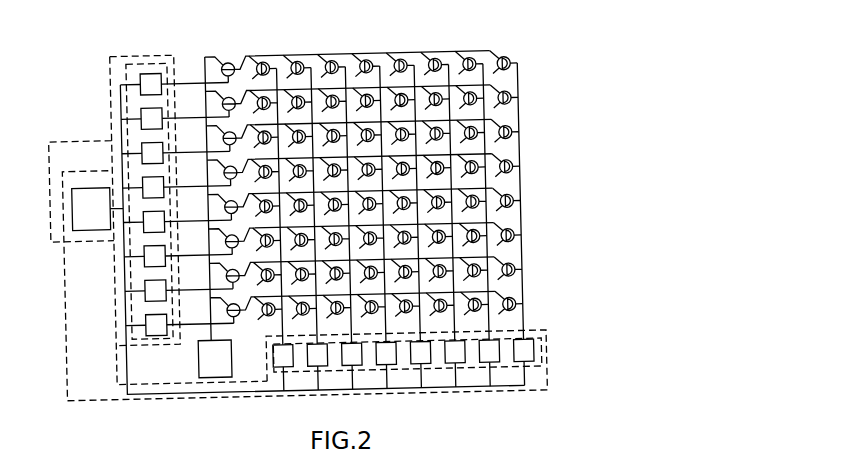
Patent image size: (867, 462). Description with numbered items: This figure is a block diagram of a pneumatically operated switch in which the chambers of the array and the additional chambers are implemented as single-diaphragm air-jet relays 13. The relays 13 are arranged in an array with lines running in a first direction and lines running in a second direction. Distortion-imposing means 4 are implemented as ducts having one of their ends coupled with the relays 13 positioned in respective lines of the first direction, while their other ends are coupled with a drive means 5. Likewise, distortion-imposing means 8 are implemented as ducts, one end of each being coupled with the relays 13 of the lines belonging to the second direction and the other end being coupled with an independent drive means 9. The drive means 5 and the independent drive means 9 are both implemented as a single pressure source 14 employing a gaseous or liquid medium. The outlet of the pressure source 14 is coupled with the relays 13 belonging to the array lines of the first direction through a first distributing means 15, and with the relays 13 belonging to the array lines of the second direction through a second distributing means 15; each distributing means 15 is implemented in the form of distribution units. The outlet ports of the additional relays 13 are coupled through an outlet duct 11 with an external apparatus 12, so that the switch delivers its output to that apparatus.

The distortion-imposing means 4 is at (318, 328).
The drive means 5 is at (546, 371).
The distortion-imposing means 8 is at (185, 78).
The independent drive means 9 is at (68, 136).
The outlet duct 11 is at (207, 208).
The external apparatus 12 is at (215, 359).
The single-diaphragm air-jet relay 13 is at (261, 65).
The single pressure source 14 is at (91, 209).
The distributing means 15 is at (122, 71).